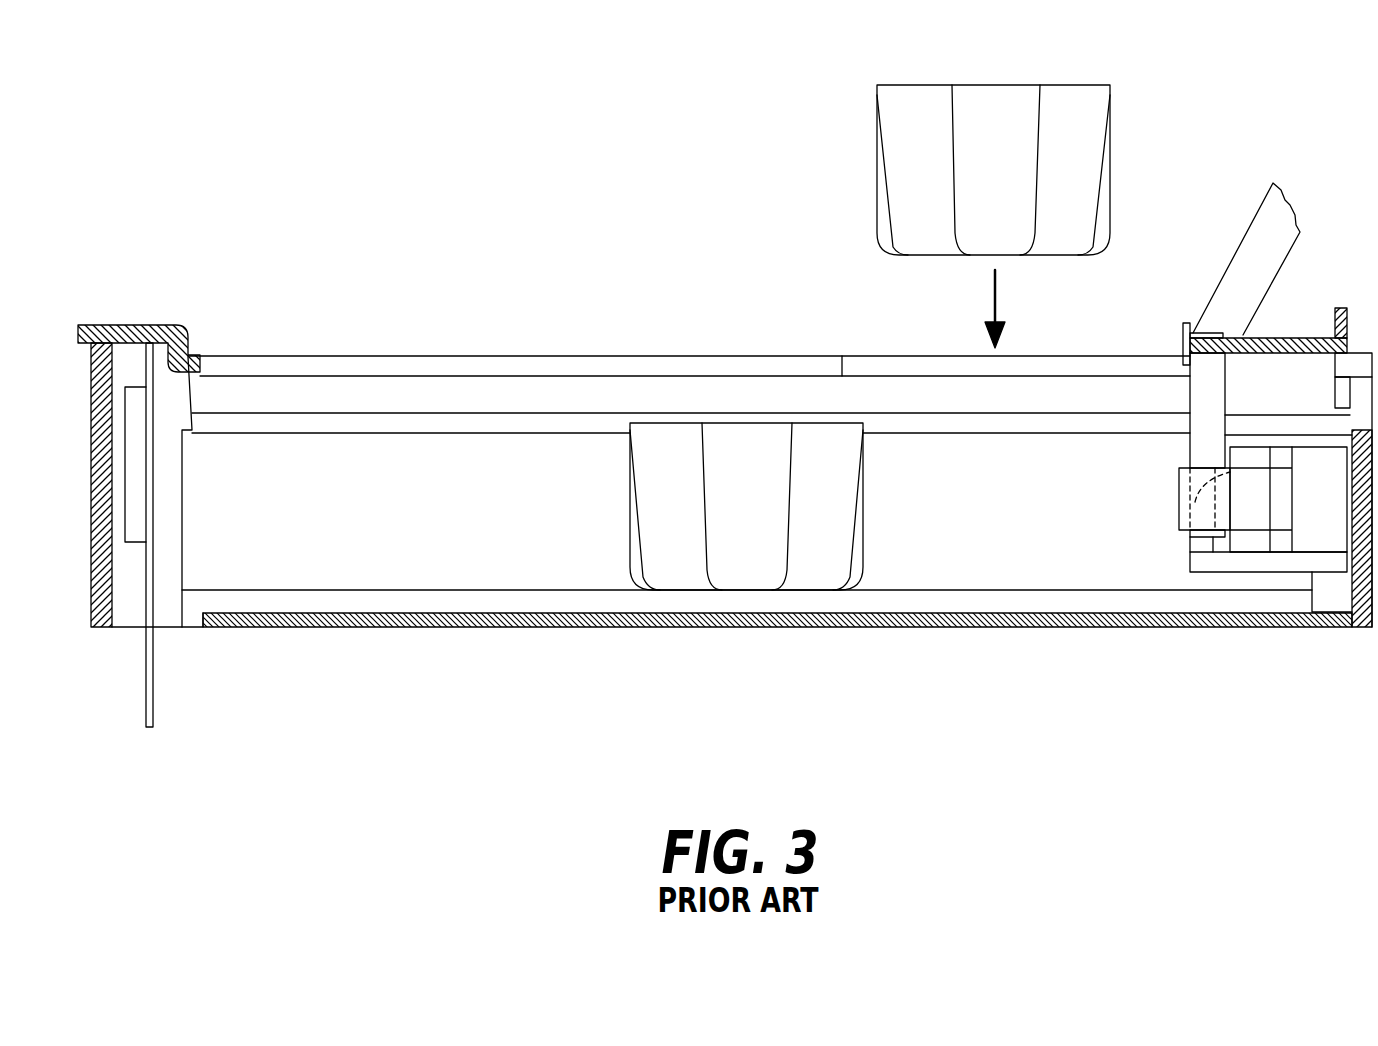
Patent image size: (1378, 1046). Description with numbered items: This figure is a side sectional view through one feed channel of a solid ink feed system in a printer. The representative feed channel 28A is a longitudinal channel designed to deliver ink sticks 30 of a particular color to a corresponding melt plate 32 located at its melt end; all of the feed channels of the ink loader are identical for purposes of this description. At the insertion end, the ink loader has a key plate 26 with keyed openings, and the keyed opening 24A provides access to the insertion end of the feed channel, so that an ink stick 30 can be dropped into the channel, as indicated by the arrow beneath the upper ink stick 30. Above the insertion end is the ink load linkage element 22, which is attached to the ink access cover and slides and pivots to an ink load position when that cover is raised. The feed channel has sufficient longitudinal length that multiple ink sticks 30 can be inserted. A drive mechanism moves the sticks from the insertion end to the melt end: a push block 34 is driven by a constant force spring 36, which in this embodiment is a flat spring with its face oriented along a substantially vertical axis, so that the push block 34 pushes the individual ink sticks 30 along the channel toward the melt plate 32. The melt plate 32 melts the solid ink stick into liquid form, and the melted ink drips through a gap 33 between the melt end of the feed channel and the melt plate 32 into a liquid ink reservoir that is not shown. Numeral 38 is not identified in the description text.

The ink load linkage element 22 is at (1227, 267).
The keyed opening 24A is at (867, 356).
The key plate 26 is at (520, 356).
The feed channel 28A is at (240, 473).
The ink stick 30 is at (1090, 85).
The melt plate 32 is at (145, 695).
The gap 33 is at (173, 622).
The push block 34 is at (1202, 543).
The constant force spring 36 is at (1247, 515).
The post 38 is at (1190, 390).